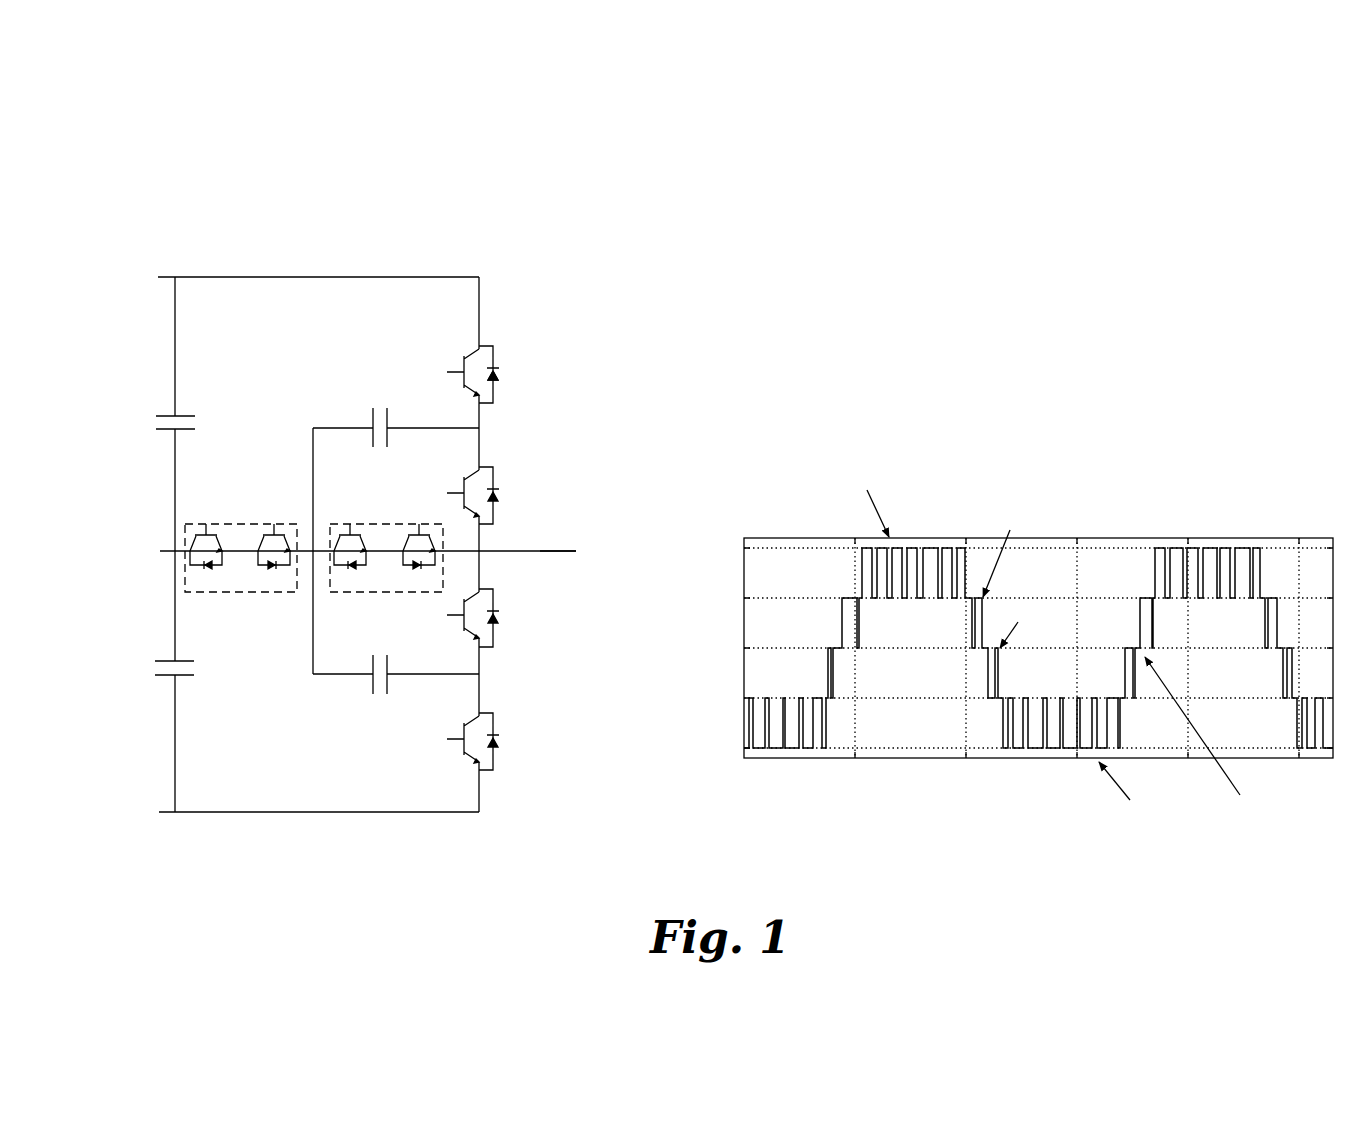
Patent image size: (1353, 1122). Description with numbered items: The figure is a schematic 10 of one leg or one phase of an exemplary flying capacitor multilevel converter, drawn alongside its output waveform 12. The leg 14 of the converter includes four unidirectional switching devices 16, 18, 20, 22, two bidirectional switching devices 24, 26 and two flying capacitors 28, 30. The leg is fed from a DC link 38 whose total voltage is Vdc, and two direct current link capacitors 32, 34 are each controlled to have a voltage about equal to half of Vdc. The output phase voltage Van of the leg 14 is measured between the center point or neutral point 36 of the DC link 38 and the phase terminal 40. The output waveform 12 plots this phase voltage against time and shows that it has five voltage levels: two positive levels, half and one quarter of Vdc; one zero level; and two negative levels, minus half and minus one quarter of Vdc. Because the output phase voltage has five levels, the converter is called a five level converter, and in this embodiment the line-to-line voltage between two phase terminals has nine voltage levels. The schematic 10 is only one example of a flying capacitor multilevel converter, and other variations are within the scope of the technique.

The schematic 10 is at (125, 246).
The output waveform 12 is at (718, 480).
The leg 14 is at (480, 277).
The unidirectional switching device 16 is at (495, 350).
The unidirectional switching device 18 is at (495, 472).
The unidirectional switching device 20 is at (495, 630).
The unidirectional switching device 22 is at (495, 716).
The bidirectional switching device 24 is at (250, 524).
The bidirectional switching device 26 is at (400, 524).
The flying capacitor 28 is at (372, 418).
The flying capacitor 30 is at (372, 665).
The DC link capacitor 32 is at (160, 416).
The DC link capacitor 34 is at (160, 661).
The neutral point 36 is at (163, 551).
The DC link 38 is at (175, 310).
The phase terminal 40 is at (543, 551).